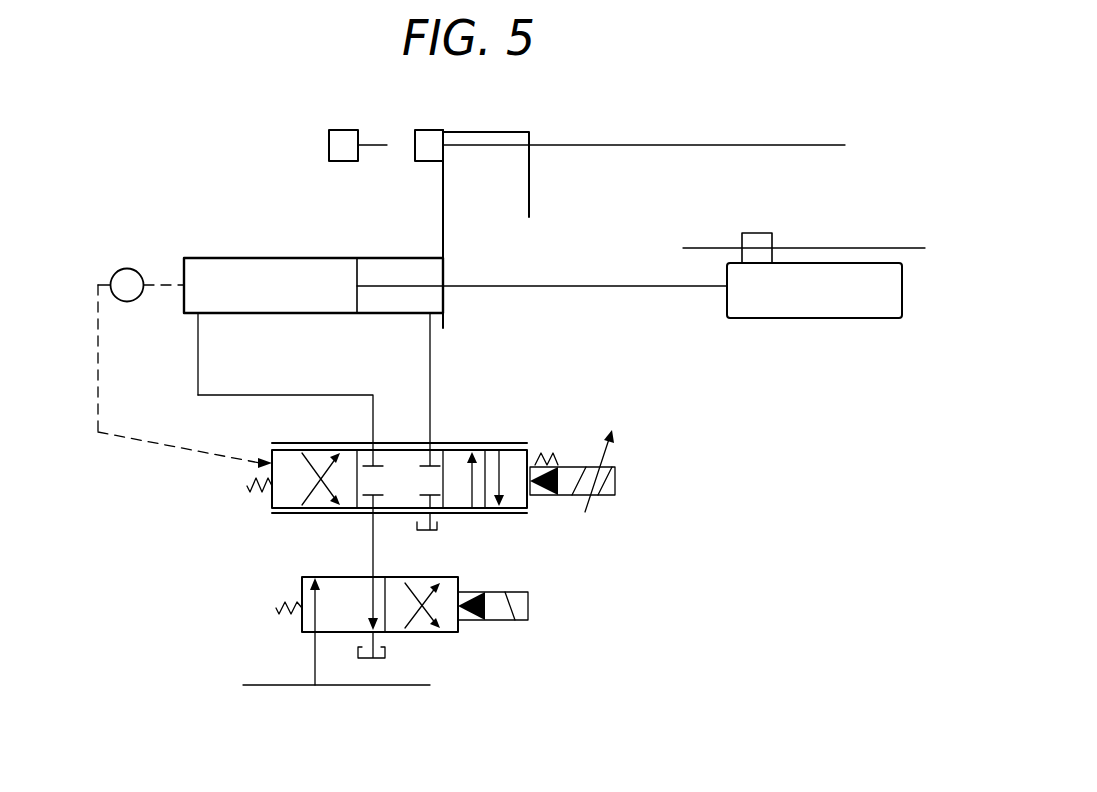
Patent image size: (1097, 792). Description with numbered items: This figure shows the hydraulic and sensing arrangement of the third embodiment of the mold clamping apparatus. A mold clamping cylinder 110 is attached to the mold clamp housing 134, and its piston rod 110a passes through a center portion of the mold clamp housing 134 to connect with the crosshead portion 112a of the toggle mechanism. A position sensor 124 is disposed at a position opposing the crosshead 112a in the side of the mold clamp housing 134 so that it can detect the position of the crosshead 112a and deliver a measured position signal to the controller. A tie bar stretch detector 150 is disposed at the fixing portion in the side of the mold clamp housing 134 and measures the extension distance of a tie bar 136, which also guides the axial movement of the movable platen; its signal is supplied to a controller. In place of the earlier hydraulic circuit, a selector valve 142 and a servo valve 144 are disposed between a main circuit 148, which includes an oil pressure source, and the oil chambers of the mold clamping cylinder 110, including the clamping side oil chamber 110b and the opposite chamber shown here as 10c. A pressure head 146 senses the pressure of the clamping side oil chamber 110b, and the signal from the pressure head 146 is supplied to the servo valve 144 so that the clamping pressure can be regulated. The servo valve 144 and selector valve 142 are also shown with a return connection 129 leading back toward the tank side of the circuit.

The tie bar stretch detector 150 is at (430, 130).
The mold clamp housing 134 is at (505, 132).
The tie bar 136 is at (740, 146).
The position sensor 124 is at (762, 233).
The pressure head 146 is at (133, 268).
The mold clamping cylinder 110 is at (282, 258).
The cylinder rod portion 10c is at (392, 264).
The clamping side oil chamber 110b is at (275, 313).
The piston rod 110a is at (568, 287).
The crosshead portion 112a is at (757, 318).
The servo valve 144 is at (532, 514).
The drain/tank 129 is at (390, 655).
The selector valve 142 is at (460, 632).
The main circuit 148 is at (305, 686).